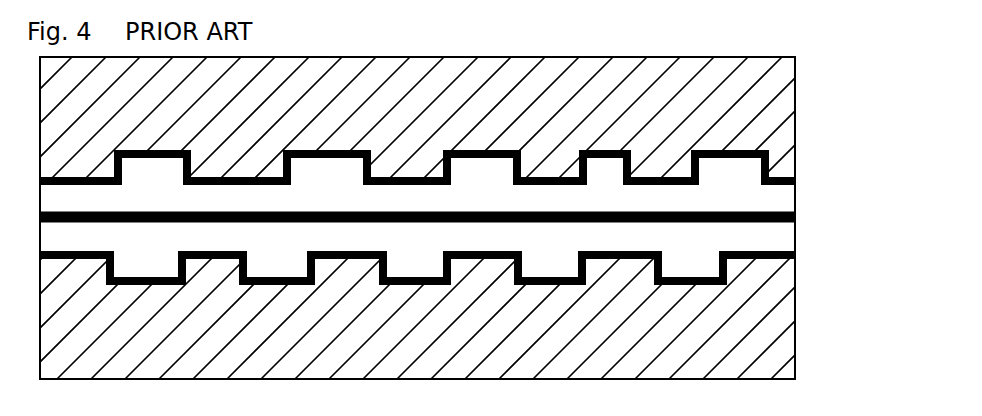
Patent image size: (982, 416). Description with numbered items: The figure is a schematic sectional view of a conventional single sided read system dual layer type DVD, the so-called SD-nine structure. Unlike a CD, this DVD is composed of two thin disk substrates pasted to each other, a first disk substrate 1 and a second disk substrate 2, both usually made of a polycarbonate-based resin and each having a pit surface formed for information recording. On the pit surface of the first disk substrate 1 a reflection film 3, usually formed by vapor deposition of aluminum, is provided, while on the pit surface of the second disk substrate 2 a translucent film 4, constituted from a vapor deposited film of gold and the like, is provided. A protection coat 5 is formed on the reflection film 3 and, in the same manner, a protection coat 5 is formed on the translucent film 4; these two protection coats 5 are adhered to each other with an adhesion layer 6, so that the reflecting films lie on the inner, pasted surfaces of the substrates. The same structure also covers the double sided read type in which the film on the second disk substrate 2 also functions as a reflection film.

The first disk substrate 1 is at (787, 343).
The second disk substrate 2 is at (785, 108).
The reflection film 3 is at (797, 256).
The translucent film 4 is at (797, 179).
The protection coat 5 is at (783, 198).
The adhesion layer 6 is at (797, 210).